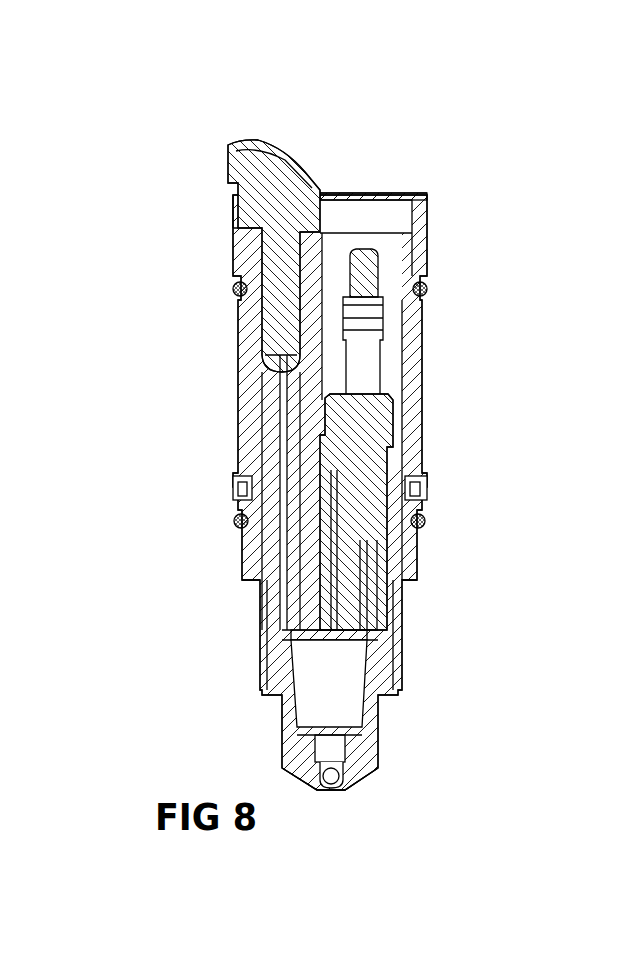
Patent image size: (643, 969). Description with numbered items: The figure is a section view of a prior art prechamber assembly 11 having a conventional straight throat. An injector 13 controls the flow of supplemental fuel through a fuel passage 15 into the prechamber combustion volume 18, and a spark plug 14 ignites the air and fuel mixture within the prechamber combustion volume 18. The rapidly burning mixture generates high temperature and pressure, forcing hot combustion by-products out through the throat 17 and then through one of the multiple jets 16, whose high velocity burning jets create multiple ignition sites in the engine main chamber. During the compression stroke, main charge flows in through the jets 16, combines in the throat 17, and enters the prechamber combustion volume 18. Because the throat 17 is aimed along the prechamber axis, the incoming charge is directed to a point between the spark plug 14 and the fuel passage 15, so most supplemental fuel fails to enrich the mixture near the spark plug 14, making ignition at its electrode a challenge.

The prechamber assembly 11 is at (362, 218).
The injector 13 is at (250, 163).
The spark plug 14 is at (362, 388).
The fuel passage 15 is at (287, 418).
The jets 16 is at (362, 787).
The throat 17 is at (328, 757).
The prechamber combustion volume 18 is at (328, 677).